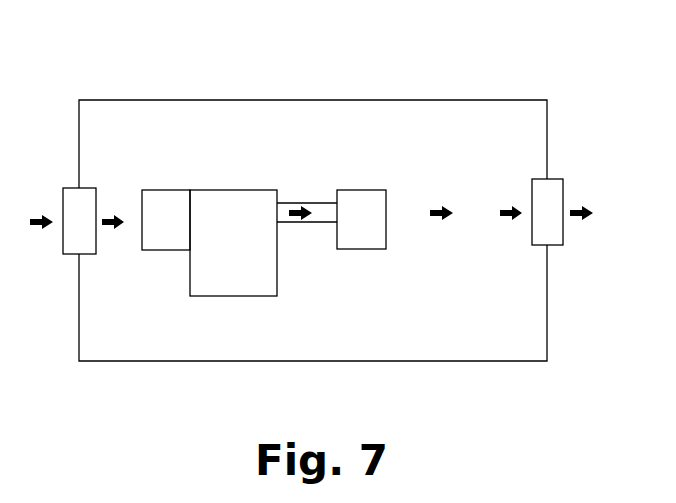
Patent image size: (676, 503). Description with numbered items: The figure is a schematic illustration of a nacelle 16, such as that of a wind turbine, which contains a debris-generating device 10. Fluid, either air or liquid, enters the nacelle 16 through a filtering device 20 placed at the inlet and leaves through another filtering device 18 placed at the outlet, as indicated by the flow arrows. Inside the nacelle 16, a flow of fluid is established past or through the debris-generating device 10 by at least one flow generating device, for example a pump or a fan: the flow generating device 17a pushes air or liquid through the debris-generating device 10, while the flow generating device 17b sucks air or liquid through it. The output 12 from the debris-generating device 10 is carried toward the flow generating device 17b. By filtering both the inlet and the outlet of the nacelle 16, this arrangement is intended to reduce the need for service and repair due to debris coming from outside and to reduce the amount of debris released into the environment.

The nacelle 16 is at (531, 114).
The filtering device 20 is at (75, 205).
The flow generating device 17a is at (170, 203).
The debris-generating device 10 is at (238, 218).
The output 12 is at (325, 212).
The flow generating device 17b is at (366, 207).
The filtering device 18 is at (557, 193).